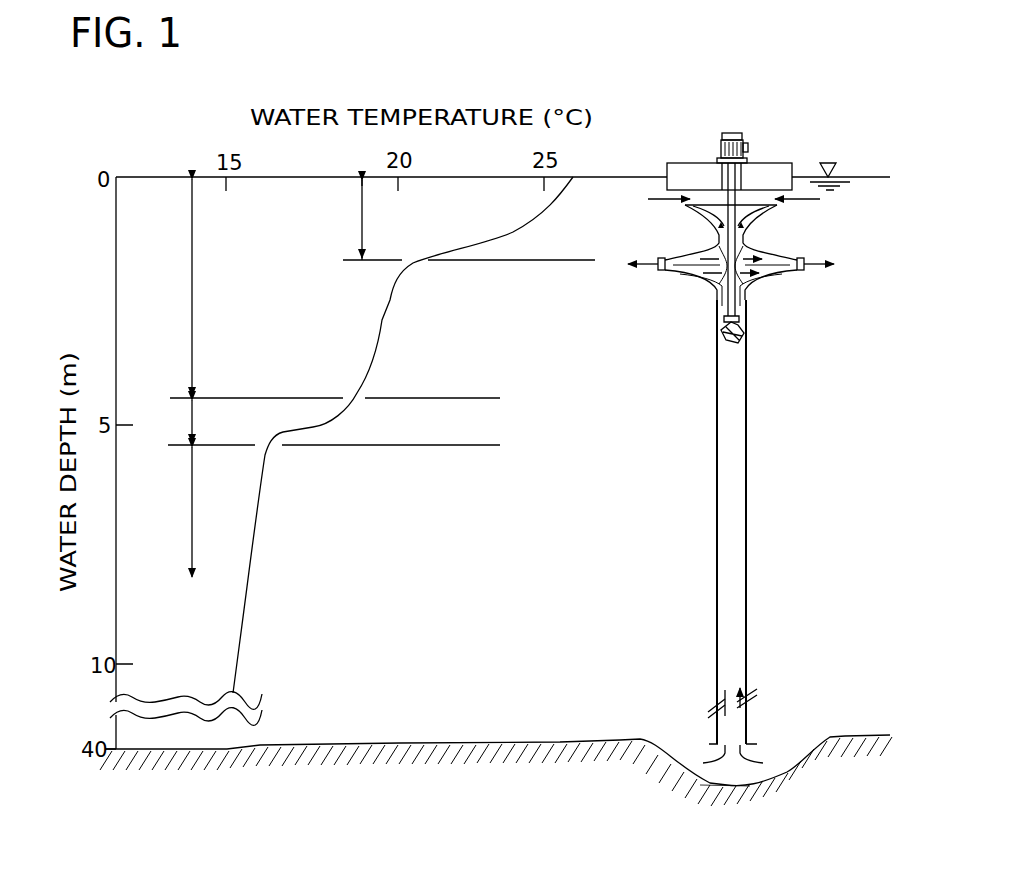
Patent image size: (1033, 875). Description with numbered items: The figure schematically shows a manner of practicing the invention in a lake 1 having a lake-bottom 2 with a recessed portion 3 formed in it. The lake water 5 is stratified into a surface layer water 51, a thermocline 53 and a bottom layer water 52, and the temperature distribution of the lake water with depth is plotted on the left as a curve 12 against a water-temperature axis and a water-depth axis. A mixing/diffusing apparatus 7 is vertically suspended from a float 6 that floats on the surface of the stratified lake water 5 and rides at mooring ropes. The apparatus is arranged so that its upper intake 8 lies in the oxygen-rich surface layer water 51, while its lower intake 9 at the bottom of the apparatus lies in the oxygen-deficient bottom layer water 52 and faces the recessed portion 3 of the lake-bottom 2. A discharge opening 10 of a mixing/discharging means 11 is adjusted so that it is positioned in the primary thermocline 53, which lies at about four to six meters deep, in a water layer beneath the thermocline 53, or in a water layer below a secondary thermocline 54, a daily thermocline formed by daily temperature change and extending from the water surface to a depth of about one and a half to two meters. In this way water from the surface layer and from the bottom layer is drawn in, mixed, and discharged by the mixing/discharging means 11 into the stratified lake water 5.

The lake 1 is at (860, 148).
The lake-bottom 2 is at (462, 742).
The recessed portion 3 is at (727, 784).
The lake water 5 is at (612, 193).
The float 6 is at (770, 163).
The mixing/diffusing apparatus 7 is at (790, 388).
The upper intake 8 is at (760, 207).
The lower intake 9 is at (749, 740).
The discharge opening 10 is at (807, 263).
The mixing/discharging means 11 is at (780, 275).
The curve 12 is at (383, 328).
The surface layer water 51 is at (335, 288).
The bottom layer water 52 is at (208, 512).
The thermocline 53 is at (334, 422).
The secondary thermocline 54 is at (469, 219).